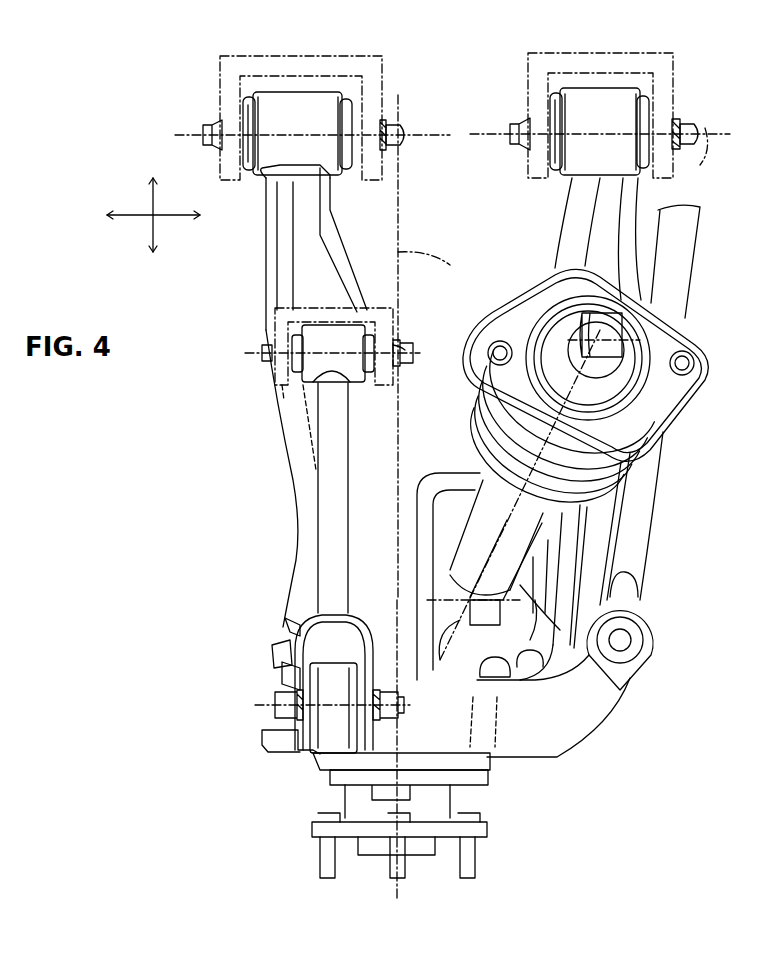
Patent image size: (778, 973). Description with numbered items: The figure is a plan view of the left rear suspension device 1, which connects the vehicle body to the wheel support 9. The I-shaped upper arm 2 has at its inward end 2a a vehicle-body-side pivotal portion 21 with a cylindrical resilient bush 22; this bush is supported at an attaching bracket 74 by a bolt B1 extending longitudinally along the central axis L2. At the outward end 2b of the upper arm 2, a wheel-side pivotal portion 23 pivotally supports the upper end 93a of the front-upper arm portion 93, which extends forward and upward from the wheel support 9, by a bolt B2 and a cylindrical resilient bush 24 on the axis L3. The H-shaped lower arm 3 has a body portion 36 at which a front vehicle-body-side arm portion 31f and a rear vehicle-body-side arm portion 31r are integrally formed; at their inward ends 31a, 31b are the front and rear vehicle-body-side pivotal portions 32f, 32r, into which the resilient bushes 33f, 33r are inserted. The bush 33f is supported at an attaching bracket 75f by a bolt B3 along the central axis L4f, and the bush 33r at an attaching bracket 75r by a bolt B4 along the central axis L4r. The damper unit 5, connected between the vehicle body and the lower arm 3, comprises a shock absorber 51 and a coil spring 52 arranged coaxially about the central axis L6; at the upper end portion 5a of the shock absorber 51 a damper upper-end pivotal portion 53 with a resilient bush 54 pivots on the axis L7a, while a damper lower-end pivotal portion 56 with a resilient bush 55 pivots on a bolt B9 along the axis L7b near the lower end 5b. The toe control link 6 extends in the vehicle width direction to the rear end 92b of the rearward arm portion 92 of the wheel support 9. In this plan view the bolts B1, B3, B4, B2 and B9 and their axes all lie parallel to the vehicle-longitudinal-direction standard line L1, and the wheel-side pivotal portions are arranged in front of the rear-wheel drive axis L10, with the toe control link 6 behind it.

The rear suspension device 1 is at (672, 712).
The upper arm 2 is at (314, 453).
The inward end of the upper arm 2a is at (314, 338).
The outward end of the upper arm 2b is at (285, 622).
The lower arm 3 is at (434, 396).
The front vehicle-body-side arm portion 31f is at (340, 225).
The rear vehicle-body-side arm portion 31r is at (570, 215).
The inward end of the front vehicle-body-side arm portion 31a is at (268, 90).
The inward end of the rear vehicle-body-side arm portion 31b is at (585, 85).
The front vehicle-body-side pivotal portion 32f is at (318, 88).
The rear vehicle-body-side pivotal portion 32r is at (620, 84).
The resilient bush 33f is at (243, 110).
The resilient bush 33r is at (550, 106).
The body portion of the lower arm 36 is at (297, 546).
The vehicle-body-side pivotal portion 21 is at (285, 385).
The resilient bush 22 is at (300, 330).
The wheel-side pivotal portion 23 is at (270, 645).
The resilient bush 24 is at (310, 698).
The damper unit 5 is at (556, 474).
The upper end portion of the shock absorber 5a is at (604, 368).
The damper lower end 5b is at (480, 630).
The shock absorber 51 is at (480, 500).
The coil spring 52 is at (470, 408).
The damper upper-end pivotal portion 53 is at (590, 372).
The resilient bush 54 is at (582, 326).
The resilient bush 55 is at (519, 633).
The damper lower-end pivotal portion 56 is at (446, 640).
The toe control link 6 is at (665, 508).
The wheel support 9 is at (500, 762).
The rearward arm portion 92 is at (580, 675).
The rear end of the rearward arm portion 92b is at (652, 628).
The front-upper arm portion 93 is at (329, 710).
The upper end of the front-upper arm portion 93a is at (282, 675).
The attaching bracket 74 is at (398, 308).
The attaching bracket 75f is at (382, 80).
The attaching bracket 75r is at (673, 88).
The bolt B1 is at (258, 358).
The bolt B2 is at (402, 712).
The bolt B3 is at (404, 128).
The bolt B4 is at (698, 125).
The bolt B9 is at (540, 615).
The vehicle-longitudinal-direction standard line L1 is at (170, 217).
The central axis of the resilient bush L2 is at (258, 348).
The axis L3 is at (262, 712).
The central axis of the resilient bush L4f is at (398, 150).
The central axis of the resilient bush L4r is at (703, 154).
The central axis L6 is at (520, 495).
The axis L7a is at (589, 350).
The axis L7b is at (462, 631).
The rear-wheel drive axis L10 is at (437, 267).